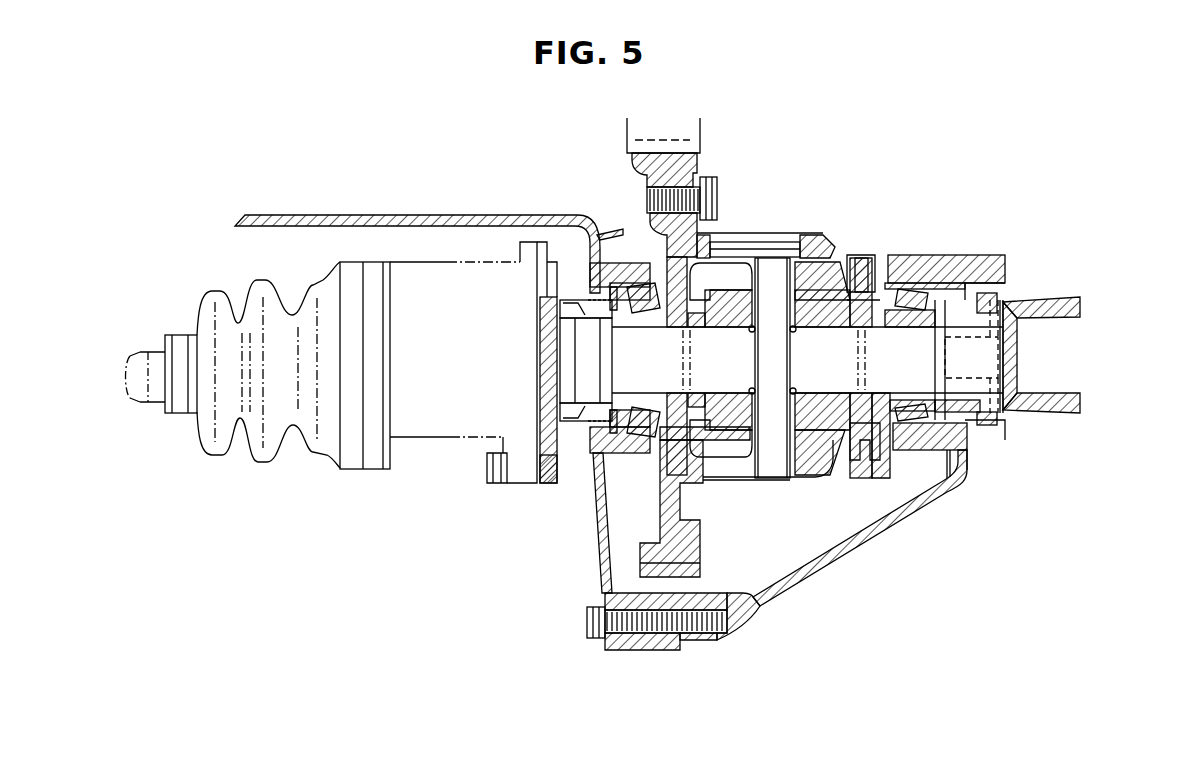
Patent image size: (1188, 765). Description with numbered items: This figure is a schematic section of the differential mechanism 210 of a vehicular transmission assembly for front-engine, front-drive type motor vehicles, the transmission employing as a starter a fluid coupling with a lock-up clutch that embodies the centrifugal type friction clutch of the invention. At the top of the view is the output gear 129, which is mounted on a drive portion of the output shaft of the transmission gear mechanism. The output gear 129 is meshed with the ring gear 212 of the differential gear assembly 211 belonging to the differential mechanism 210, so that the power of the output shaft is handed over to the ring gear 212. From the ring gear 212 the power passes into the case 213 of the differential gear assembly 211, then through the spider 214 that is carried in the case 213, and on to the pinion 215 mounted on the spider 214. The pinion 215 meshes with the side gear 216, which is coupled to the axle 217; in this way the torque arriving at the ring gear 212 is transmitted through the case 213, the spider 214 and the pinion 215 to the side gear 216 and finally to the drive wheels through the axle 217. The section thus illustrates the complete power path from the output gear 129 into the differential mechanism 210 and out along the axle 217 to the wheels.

The output gear 129 is at (688, 143).
The differential mechanism 210 is at (783, 493).
The differential gear assembly 211 is at (838, 278).
The ring gear 212 is at (697, 633).
The case 213 is at (880, 453).
The spider 214 is at (787, 477).
The pinion 215 is at (840, 457).
The side gear 216 is at (947, 493).
The axle 217 is at (917, 358).